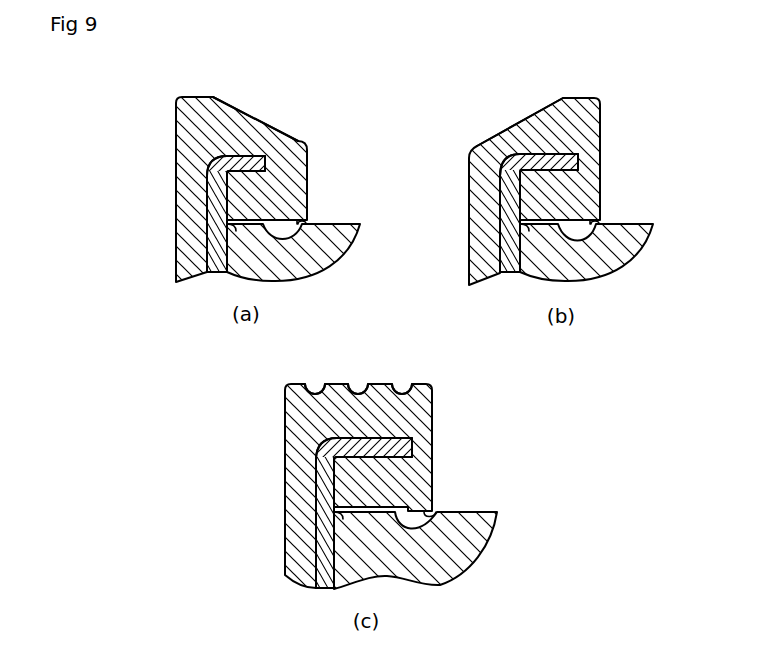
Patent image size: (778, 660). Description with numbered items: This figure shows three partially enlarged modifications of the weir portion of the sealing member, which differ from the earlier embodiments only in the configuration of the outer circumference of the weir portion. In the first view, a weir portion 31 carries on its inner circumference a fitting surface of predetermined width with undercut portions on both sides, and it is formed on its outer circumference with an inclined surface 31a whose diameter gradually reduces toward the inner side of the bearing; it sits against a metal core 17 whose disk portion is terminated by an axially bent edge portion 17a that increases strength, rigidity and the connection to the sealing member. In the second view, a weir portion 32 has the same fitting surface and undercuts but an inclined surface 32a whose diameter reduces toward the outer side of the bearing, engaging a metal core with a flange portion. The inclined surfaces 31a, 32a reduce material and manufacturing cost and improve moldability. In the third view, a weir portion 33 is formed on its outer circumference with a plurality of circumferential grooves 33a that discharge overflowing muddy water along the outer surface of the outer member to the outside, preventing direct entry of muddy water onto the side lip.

The weir portion 31 is at (199, 112).
The inclined surface 31a is at (268, 126).
The metal core 17 is at (198, 209).
The bent edge portion 17a is at (243, 165).
The weir portion 32 is at (581, 99).
The inclined surface 32a is at (507, 129).
The weir portion 33 is at (425, 395).
The circumferential grooves 33a is at (315, 384).